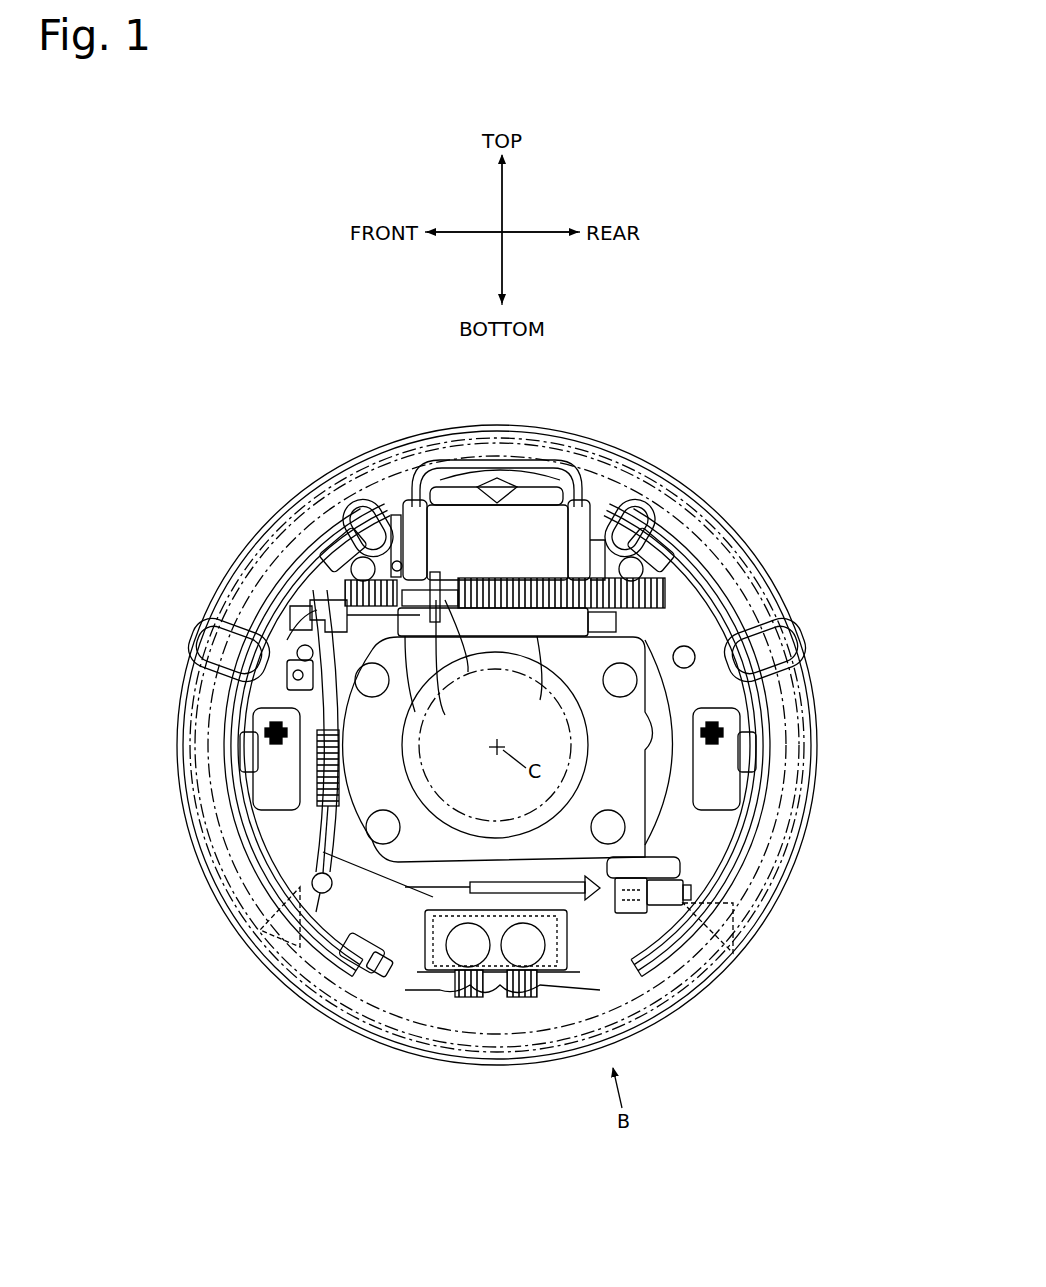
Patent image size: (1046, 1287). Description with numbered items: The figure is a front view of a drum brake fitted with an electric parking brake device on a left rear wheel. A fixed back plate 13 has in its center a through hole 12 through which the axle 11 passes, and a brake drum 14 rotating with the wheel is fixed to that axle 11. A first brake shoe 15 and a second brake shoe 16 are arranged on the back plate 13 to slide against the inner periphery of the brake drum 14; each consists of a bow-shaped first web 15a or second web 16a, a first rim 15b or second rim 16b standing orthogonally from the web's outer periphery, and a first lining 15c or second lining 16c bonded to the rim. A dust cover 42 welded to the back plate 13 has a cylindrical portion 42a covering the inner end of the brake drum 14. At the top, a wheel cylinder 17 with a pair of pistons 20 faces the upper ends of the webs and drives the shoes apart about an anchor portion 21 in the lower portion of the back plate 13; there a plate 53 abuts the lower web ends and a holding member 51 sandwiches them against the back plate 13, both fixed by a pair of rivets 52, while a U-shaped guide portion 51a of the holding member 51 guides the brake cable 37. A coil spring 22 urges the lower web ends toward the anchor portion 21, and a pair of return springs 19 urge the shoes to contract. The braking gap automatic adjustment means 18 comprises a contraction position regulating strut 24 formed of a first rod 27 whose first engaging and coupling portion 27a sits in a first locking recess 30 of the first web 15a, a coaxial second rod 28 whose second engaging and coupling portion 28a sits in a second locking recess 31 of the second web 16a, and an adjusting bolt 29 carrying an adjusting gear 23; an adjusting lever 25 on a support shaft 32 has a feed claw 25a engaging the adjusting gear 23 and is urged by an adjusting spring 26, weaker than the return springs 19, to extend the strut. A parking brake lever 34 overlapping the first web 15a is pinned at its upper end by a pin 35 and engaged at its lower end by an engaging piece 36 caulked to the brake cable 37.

The axle 11 is at (410, 750).
The through hole 12 is at (575, 786).
The back plate 13 is at (393, 855).
The brake drum 14 is at (305, 486).
The first brake shoe 15 is at (722, 580).
The first web 15a is at (663, 798).
The first rim 15b is at (745, 655).
The first lining 15c is at (770, 745).
The second brake shoe 16 is at (218, 737).
The second web 16a is at (268, 696).
The second rim 16b is at (300, 660).
The second lining 16c is at (302, 636).
The wheel cylinder 17 is at (440, 495).
The braking gap automatic adjustment means 18 is at (332, 690).
The return springs 19 is at (540, 577).
The pistons 20 is at (372, 532).
The anchor portion 21 is at (425, 938).
The coil spring 22 is at (470, 952).
The adjusting gear 23 is at (445, 662).
The contraction position regulating strut 24 is at (540, 642).
The adjusting lever 25 is at (416, 716).
The feed claw 25a is at (437, 580).
The adjusting spring 26 is at (340, 768).
The first rod 27 is at (556, 626).
The first engaging and coupling portion 27a is at (640, 690).
The second rod 28 is at (412, 637).
The second engaging and coupling portion 28a is at (315, 548).
The adjusting bolt 29 is at (470, 676).
The first locking recess 30 is at (684, 668).
The second locking recess 31 is at (292, 675).
The support shaft 32 is at (290, 668).
The parking brake lever 34 is at (700, 798).
The pin 35 is at (656, 528).
The engaging piece 36 is at (690, 905).
The brake cable 37 is at (443, 884).
The dust cover 42 is at (455, 425).
The cylindrical portion 42a is at (537, 430).
The holding member 51 is at (580, 930).
The guide portion 51a is at (476, 884).
The rivets 52 is at (520, 978).
The plate 53 is at (375, 992).